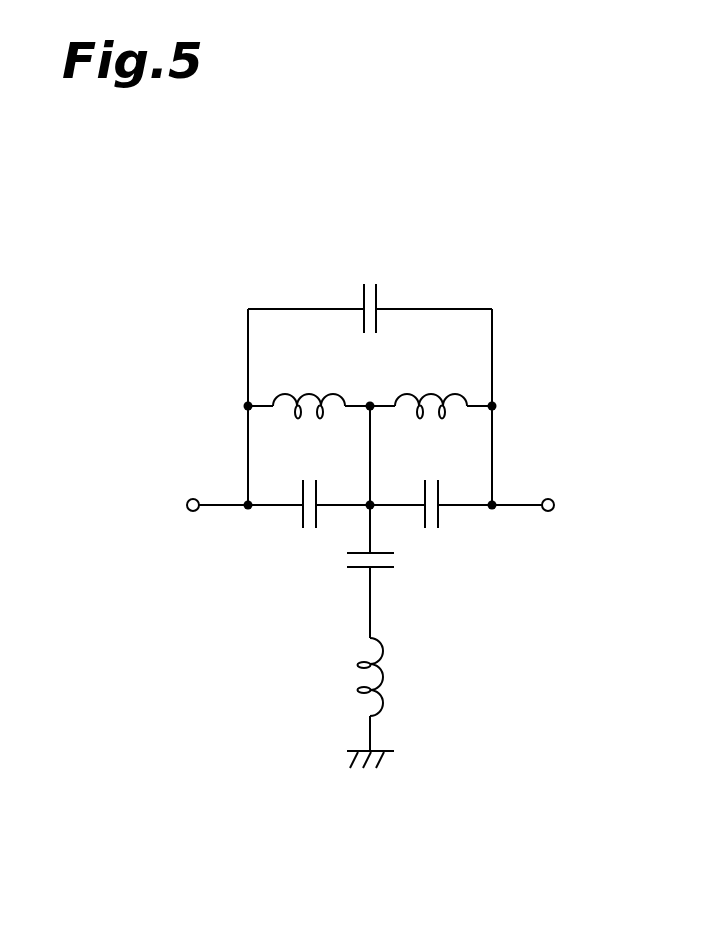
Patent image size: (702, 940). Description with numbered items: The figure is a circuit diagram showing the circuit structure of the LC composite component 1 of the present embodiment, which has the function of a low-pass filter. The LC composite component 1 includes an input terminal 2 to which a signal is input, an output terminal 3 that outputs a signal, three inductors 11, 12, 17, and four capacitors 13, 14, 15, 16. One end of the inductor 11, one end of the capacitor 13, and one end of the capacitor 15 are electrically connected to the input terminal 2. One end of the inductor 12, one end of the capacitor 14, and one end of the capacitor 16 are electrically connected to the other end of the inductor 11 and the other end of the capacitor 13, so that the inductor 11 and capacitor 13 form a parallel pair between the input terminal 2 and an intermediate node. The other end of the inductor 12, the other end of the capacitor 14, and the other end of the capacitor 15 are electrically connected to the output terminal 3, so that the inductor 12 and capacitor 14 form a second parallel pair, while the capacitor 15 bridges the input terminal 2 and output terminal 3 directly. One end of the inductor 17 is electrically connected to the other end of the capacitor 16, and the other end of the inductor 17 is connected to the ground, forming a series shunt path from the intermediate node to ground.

The LC composite component 1 is at (368, 244).
The input terminal 2 is at (193, 496).
The output terminal 3 is at (548, 496).
The inductor 11 is at (308, 394).
The inductor 12 is at (429, 394).
The capacitor 13 is at (298, 497).
The capacitor 14 is at (446, 497).
The capacitor 15 is at (380, 292).
The capacitor 16 is at (390, 570).
The inductor 17 is at (384, 681).